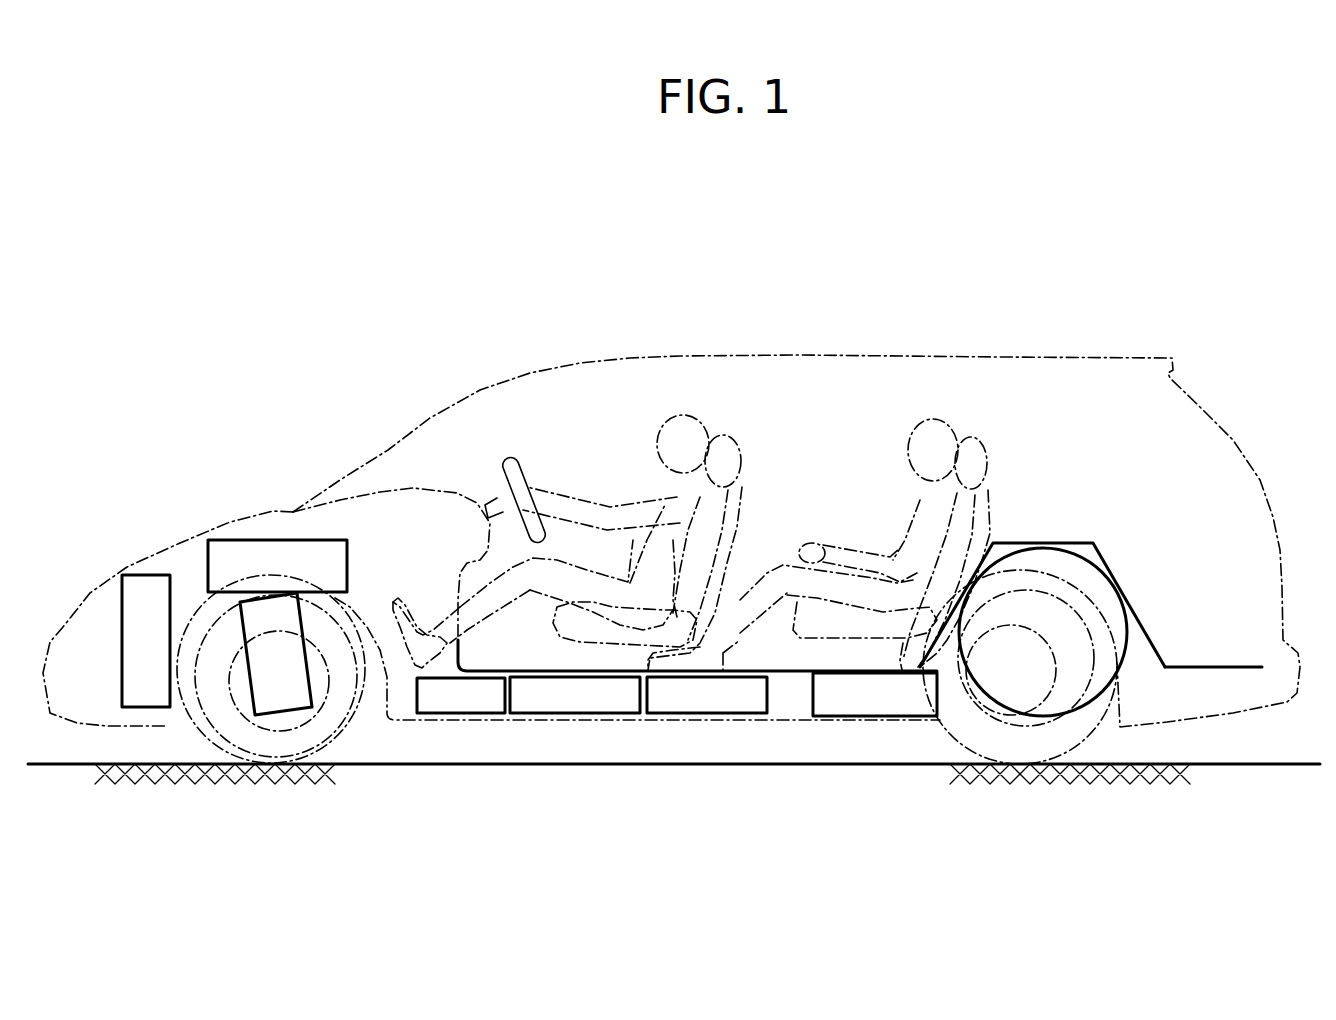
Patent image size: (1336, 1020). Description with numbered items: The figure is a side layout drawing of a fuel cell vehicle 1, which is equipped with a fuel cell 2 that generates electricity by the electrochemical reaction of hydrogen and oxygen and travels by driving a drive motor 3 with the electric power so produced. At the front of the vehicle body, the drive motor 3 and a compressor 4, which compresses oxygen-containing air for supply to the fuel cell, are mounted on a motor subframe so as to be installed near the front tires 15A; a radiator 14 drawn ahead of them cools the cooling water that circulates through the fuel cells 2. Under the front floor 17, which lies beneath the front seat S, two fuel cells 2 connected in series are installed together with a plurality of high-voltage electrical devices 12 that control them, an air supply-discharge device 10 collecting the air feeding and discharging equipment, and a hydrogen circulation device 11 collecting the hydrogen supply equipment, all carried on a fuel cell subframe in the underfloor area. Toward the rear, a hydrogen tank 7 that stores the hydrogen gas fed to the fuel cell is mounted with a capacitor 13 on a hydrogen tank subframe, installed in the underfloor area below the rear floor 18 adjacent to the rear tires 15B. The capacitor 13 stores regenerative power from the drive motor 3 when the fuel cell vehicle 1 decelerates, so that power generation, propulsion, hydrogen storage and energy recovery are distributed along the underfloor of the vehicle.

The fuel cell vehicle 1 is at (840, 316).
The fuel cell 2 is at (575, 715).
The drive motor 3 is at (287, 715).
The compressor 4 is at (245, 540).
The hydrogen tank 7 is at (1100, 562).
The air supply-discharge device 10 is at (690, 715).
The hydrogen circulation device 11 is at (707, 695).
The high-voltage electrical devices 12 is at (465, 715).
The capacitor 13 is at (912, 717).
The radiator 14 is at (145, 575).
The front tires 15A is at (203, 722).
The rear tires 15B is at (1070, 730).
The front floor 17 is at (513, 671).
The rear floor 18 is at (1222, 667).
The front seat S is at (763, 500).